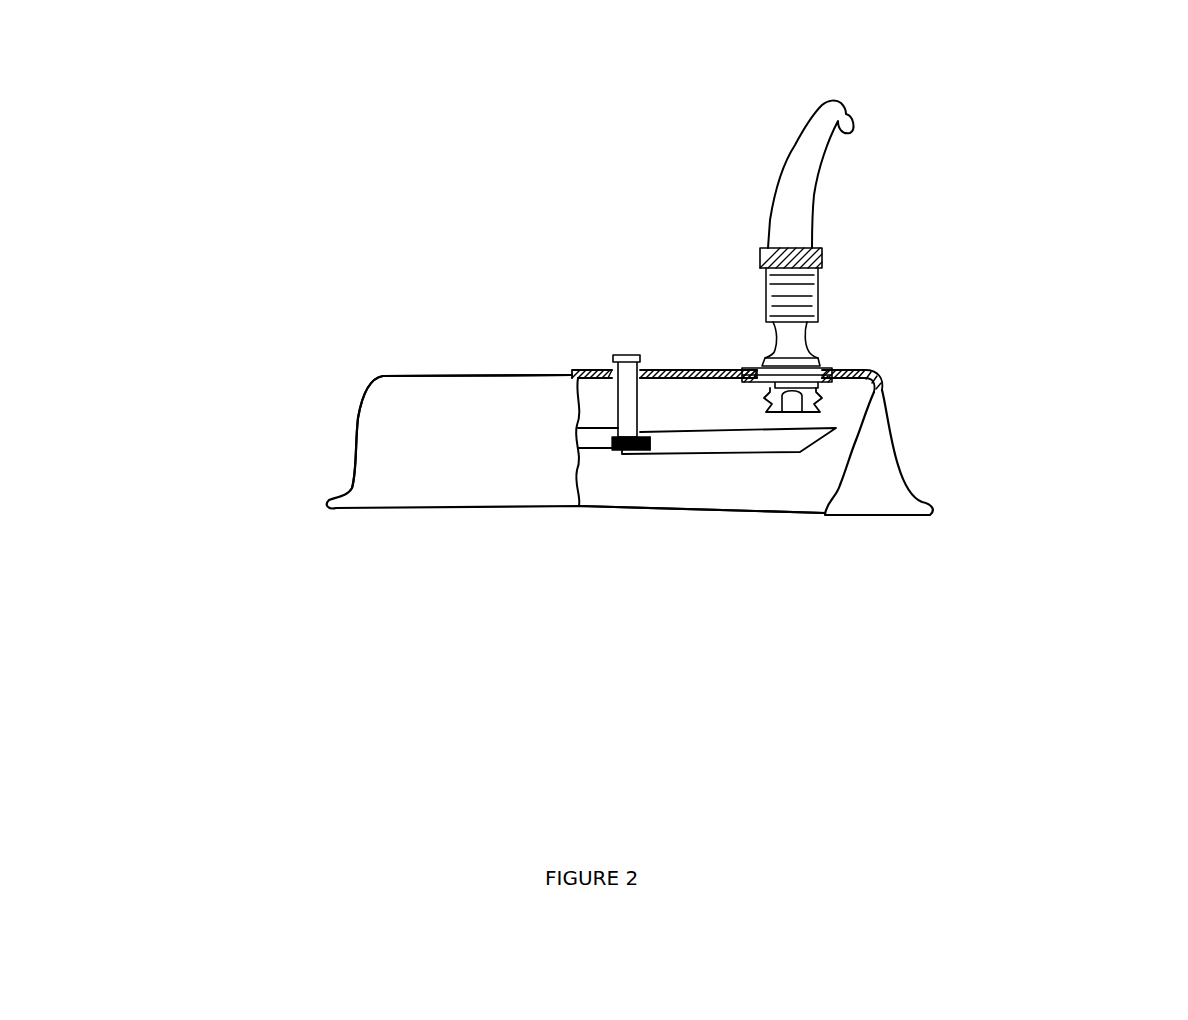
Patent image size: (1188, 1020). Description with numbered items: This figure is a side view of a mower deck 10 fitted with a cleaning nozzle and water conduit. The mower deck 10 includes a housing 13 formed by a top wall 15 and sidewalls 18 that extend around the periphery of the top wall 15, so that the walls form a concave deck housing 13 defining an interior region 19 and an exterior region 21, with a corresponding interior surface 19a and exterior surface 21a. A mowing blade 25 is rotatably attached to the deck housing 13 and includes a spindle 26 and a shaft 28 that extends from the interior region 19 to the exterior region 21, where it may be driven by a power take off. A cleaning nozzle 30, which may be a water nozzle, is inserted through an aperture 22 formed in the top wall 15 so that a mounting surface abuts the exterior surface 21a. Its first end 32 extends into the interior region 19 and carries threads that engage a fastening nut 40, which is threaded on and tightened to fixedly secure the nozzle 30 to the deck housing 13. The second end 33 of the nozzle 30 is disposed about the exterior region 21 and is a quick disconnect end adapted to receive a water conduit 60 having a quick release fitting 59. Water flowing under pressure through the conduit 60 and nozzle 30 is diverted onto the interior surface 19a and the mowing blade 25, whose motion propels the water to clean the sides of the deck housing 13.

The mower deck 10 is at (300, 322).
The housing 13 is at (405, 468).
The top wall 15 is at (451, 365).
The sidewalls 18 is at (331, 442).
The interior region 19 is at (788, 520).
The interior surface 19a is at (706, 386).
The exterior region 21 is at (975, 457).
The exterior surface 21a is at (550, 377).
The aperture 22 is at (758, 357).
The mowing blade 25 is at (705, 437).
The spindle 26 is at (655, 466).
The shaft 28 is at (631, 357).
The cleaning nozzle 30 is at (820, 325).
The first end 32 is at (822, 401).
The second end 33 is at (830, 295).
The fastening nut 40 is at (823, 370).
The quick release fitting 59 is at (823, 252).
The water conduit 60 is at (790, 208).